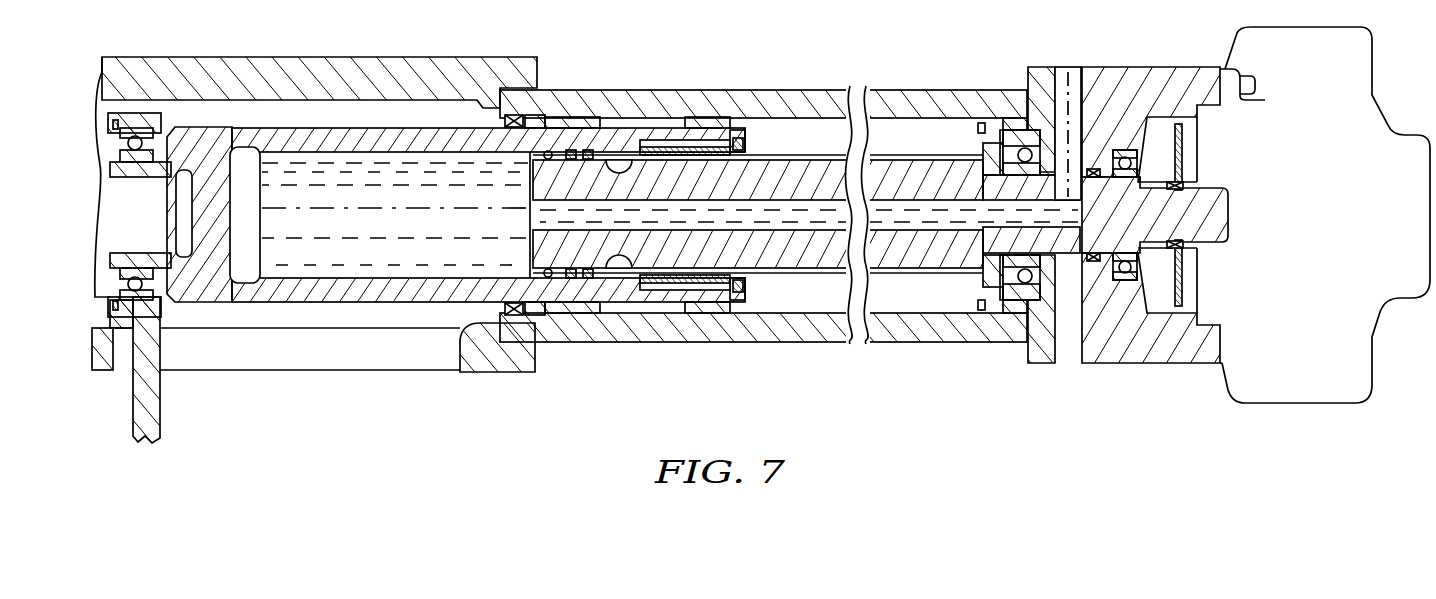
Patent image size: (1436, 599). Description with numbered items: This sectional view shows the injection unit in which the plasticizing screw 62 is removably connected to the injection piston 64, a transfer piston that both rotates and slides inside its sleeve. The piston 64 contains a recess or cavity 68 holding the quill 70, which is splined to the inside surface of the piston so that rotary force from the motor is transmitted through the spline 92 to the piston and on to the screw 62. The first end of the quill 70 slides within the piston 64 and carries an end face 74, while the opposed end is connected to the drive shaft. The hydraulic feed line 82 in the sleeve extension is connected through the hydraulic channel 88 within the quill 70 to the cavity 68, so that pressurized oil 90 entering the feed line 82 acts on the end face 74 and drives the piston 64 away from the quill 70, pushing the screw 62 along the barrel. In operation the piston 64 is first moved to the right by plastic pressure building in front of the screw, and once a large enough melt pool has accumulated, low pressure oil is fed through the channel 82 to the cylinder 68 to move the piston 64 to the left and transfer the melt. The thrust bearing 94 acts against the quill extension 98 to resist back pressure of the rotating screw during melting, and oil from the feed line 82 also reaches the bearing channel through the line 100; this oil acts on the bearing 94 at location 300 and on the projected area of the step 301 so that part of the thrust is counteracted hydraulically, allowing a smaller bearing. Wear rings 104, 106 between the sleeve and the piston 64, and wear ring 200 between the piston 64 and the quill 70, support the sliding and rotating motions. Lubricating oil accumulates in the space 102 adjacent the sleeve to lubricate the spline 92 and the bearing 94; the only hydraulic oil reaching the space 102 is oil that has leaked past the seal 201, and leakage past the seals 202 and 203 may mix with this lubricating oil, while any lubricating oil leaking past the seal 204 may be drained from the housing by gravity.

The plasticizing screw 62 is at (145, 237).
The injection piston 64 is at (210, 293).
The cavity 68 is at (343, 262).
The quill 70 is at (815, 180).
The end face 74 is at (533, 257).
The hydraulic feed line 82 is at (1062, 77).
The hydraulic channel 88 is at (920, 203).
The pressurized oil 90 is at (351, 228).
The spline 92 is at (670, 147).
The thrust bearing 94 is at (1040, 273).
The quill extension 98 is at (993, 285).
The line 100 is at (1080, 243).
The space 102 is at (752, 302).
The wear ring 104 is at (707, 313).
The wear ring 106 is at (575, 312).
The wear ring 200 is at (585, 150).
The seal 201 is at (547, 151).
The seal 202 is at (1003, 137).
The seal 203 is at (1093, 166).
The seal 204 is at (513, 113).
The bearing location 300 is at (1040, 273).
The step 301 is at (1050, 245).